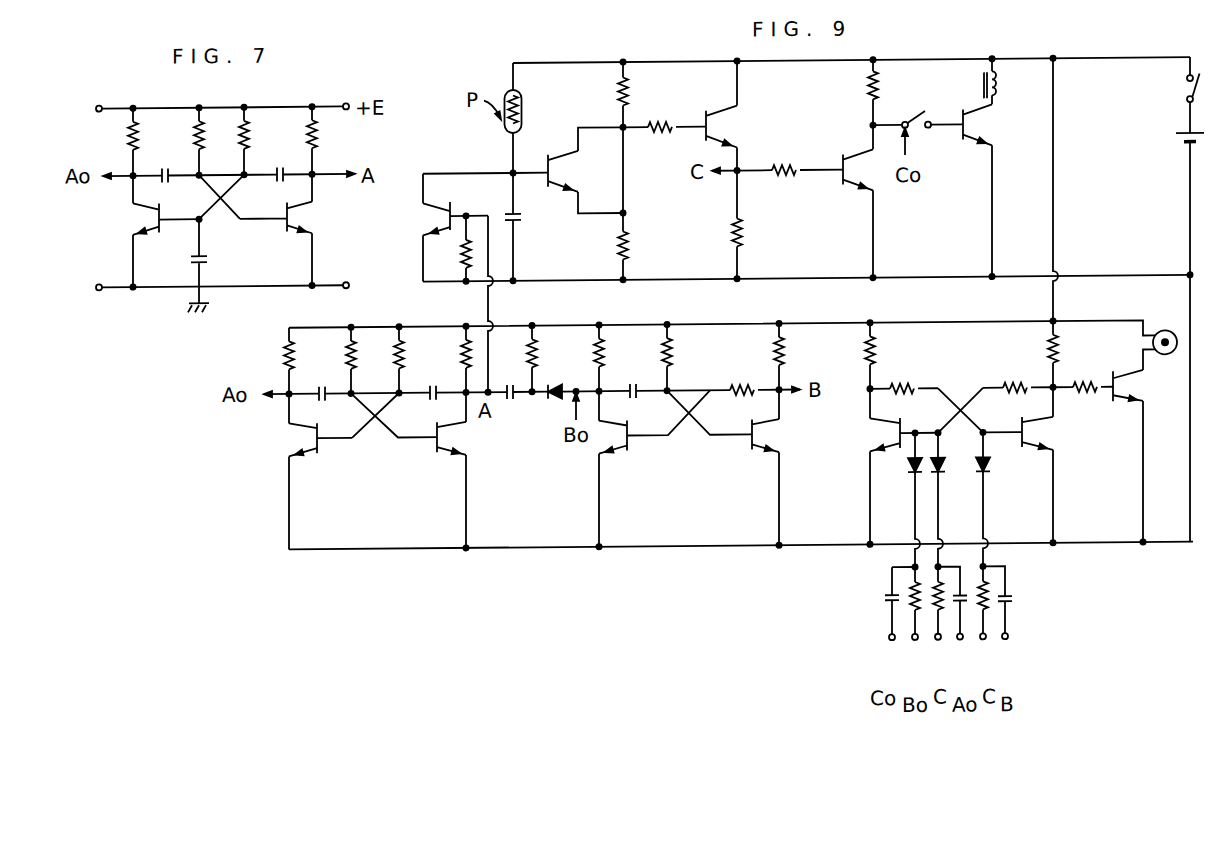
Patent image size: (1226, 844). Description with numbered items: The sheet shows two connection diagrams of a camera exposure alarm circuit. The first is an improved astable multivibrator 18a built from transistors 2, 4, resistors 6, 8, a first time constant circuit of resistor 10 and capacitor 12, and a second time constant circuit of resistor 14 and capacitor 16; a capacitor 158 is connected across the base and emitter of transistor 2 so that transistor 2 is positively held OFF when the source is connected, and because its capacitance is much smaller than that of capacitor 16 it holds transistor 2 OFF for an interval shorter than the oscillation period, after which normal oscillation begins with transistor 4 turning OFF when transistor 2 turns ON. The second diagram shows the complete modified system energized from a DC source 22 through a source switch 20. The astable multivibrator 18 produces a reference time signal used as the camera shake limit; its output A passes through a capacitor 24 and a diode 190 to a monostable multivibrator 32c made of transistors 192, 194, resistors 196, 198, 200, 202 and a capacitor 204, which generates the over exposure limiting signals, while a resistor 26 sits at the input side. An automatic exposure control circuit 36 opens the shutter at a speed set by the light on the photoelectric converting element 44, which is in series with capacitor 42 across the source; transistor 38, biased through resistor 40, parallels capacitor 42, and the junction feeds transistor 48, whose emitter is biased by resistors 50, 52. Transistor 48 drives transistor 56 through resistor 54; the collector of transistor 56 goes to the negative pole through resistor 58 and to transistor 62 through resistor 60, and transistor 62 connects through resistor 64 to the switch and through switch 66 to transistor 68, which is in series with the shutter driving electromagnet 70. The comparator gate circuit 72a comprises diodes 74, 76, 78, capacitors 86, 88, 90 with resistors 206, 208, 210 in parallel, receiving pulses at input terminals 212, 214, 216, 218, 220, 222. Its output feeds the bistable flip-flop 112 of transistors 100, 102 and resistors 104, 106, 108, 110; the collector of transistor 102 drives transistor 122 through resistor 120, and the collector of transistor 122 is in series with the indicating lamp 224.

In FIG. 7, the transistor 2 is at (155, 219).
In FIG. 9, the transistor 2 is at (320, 453).
In FIG. 7, the transistor 4 is at (285, 218).
In FIG. 9, the transistor 4 is at (451, 450).
In FIG. 7, the resistor 6 is at (124, 136).
In FIG. 9, the resistor 6 is at (297, 351).
In FIG. 7, the resistor 8 is at (321, 134).
In FIG. 9, the resistor 8 is at (457, 350).
In FIG. 7, the resistor 10 is at (186, 135).
In FIG. 9, the resistor 10 is at (364, 351).
In FIG. 7, the capacitor 12 is at (162, 163).
In FIG. 9, the capacitor 12 is at (322, 382).
In FIG. 7, the resistor 14 is at (258, 135).
In FIG. 9, the resistor 14 is at (412, 350).
In FIG. 7, the capacitor 16 is at (285, 162).
In FIG. 9, the capacitor 16 is at (436, 381).
In FIG. 9, the astable multivibrator 18 is at (380, 489).
In FIG. 7, the astable multivibrator 18a is at (240, 243).
In FIG. 9, the source switch 20 is at (1177, 87).
In FIG. 9, the source of DC supply 22 is at (1179, 151).
In FIG. 9, the capacitor 24 is at (510, 379).
In FIG. 9, the resistor 26 is at (546, 351).
In FIG. 9, the monostable multivibrator 32c is at (705, 490).
In FIG. 9, the automatic exposure control circuit 36 is at (677, 211).
In FIG. 9, the transistor 38 is at (446, 202).
In FIG. 9, the resistor 40 is at (460, 246).
In FIG. 9, the capacitor 42 is at (528, 217).
In FIG. 9, the photoelectric converting element 44 is at (529, 111).
In FIG. 9, the transistor 48 is at (564, 171).
In FIG. 9, the resistor 50 is at (639, 88).
In FIG. 9, the resistor 52 is at (639, 246).
In FIG. 9, the resistor 54 is at (662, 113).
In FIG. 9, the transistor 56 is at (736, 126).
In FIG. 9, the resistor 58 is at (753, 232).
In FIG. 9, the resistor 60 is at (783, 156).
In FIG. 9, the transistor 62 is at (855, 181).
In FIG. 9, the resistor 64 is at (858, 83).
In FIG. 9, the switch 66 is at (915, 109).
In FIG. 9, the transistor 68 is at (993, 125).
In FIG. 9, the shutter driving electromagnet 70 is at (973, 82).
In FIG. 9, the comparator gate circuit 72a is at (977, 522).
In FIG. 9, the diode 74 is at (904, 475).
In FIG. 9, the diode 76 is at (952, 464).
In FIG. 9, the diode 78 is at (988, 477).
In FIG. 9, the capacitor 86 is at (875, 598).
In FIG. 9, the capacitor 88 is at (965, 606).
In FIG. 9, the capacitor 90 is at (1022, 598).
In FIG. 9, the transistor 100 is at (888, 435).
In FIG. 9, the transistor 102 is at (1036, 433).
In FIG. 9, the resistor 104 is at (890, 348).
In FIG. 9, the resistor 106 is at (905, 375).
In FIG. 9, the resistor 108 is at (1017, 374).
In FIG. 9, the resistor 110 is at (1074, 346).
In FIG. 9, the flip-flop circuit 112 is at (980, 358).
In FIG. 9, the resistor 120 is at (1091, 373).
In FIG. 9, the transistor 122 is at (1150, 386).
In FIG. 7, the capacitor 158 is at (179, 261).
In FIG. 9, the diode 190 is at (559, 380).
In FIG. 9, the transistor 192 is at (623, 449).
In FIG. 9, the transistor 194 is at (757, 447).
In FIG. 9, the resistor 196 is at (620, 350).
In FIG. 9, the resistor 198 is at (687, 350).
In FIG. 9, the resistor 200 is at (744, 378).
In FIG. 9, the resistor 202 is at (801, 349).
In FIG. 9, the capacitor 204 is at (637, 379).
In FIG. 9, the resistor 206 is at (912, 582).
In FIG. 9, the resistor 208 is at (962, 571).
In FIG. 9, the resistor 210 is at (990, 583).
In FIG. 9, the input terminal 212 is at (911, 645).
In FIG. 9, the input terminal 214 is at (916, 658).
In FIG. 9, the input terminal 216 is at (958, 645).
In FIG. 9, the input terminal 218 is at (962, 657).
In FIG. 9, the input terminal 220 is at (1018, 658).
In FIG. 9, the input terminal 222 is at (1017, 657).
In FIG. 9, the indicating lamp 224 is at (1167, 329).